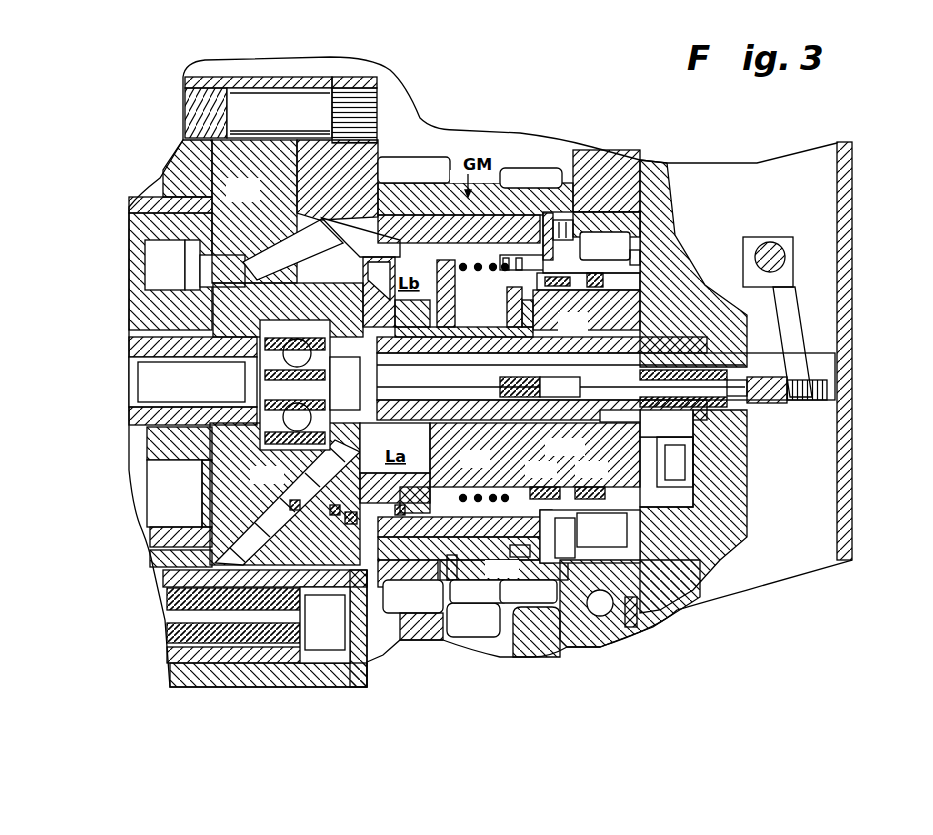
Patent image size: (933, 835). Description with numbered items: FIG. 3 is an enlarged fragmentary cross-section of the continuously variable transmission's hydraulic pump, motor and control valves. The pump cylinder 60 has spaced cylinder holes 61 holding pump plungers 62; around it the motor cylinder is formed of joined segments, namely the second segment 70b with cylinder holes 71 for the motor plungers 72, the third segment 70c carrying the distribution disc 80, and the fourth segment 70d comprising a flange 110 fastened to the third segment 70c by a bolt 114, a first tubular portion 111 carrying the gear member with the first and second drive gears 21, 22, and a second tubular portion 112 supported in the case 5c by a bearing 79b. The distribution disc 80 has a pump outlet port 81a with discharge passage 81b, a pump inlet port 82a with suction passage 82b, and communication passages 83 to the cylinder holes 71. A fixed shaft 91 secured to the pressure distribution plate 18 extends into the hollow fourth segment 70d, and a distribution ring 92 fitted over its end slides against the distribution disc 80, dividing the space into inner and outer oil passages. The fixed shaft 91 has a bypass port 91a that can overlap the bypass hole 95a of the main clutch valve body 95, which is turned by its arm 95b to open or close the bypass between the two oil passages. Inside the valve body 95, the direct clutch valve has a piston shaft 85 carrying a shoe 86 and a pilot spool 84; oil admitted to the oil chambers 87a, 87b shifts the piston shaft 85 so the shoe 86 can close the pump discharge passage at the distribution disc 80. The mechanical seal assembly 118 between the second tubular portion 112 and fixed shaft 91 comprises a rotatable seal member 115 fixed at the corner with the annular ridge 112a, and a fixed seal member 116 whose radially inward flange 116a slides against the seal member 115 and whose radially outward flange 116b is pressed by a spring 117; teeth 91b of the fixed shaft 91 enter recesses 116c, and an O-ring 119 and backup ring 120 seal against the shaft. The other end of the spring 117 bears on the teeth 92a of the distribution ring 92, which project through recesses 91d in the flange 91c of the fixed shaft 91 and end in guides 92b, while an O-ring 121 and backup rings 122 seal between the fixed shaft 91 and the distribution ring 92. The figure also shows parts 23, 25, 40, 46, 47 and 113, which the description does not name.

The case 5c is at (603, 170).
The pressure distribution plate 18 is at (738, 487).
The first drive gear 21 is at (408, 165).
The second drive gear 22 is at (535, 172).
The projection 23 is at (420, 640).
The projection 25 is at (545, 650).
The cover 40 is at (825, 267).
The lever 46 is at (798, 322).
The nut 47 is at (766, 377).
The pump cylinder 60 is at (150, 456).
The cylinder holes 61 is at (148, 484).
The pump plungers 62 is at (130, 250).
The second cylinder segment 70b is at (197, 75).
The third cylinder segment 70c is at (250, 77).
The fourth cylinder segment 70d is at (318, 80).
The cylinder holes 71 is at (250, 665).
The motor plungers 72 is at (172, 632).
The bearing 79b is at (635, 160).
The distribution disc 80 is at (258, 200).
The pump outlet port 81a is at (220, 507).
The discharge passage 81b is at (297, 467).
The pump inlet port 82a is at (225, 270).
The suction passage 82b is at (270, 250).
The communication passages 83 is at (300, 515).
The pilot spool 84 is at (700, 428).
The piston shaft 85 is at (495, 425).
The shoe 86 is at (380, 415).
The oil chamber 87a is at (700, 450).
The oil chamber 87b is at (605, 430).
The fixed shaft 91 is at (585, 331).
The bypass port 91a is at (508, 318).
The teeth 91b is at (520, 555).
The flange 91c is at (455, 268).
The recesses 91d is at (453, 600).
The distribution ring 92 is at (382, 262).
The teeth 92a is at (450, 606).
The guides 92b is at (503, 570).
The main clutch valve body 95 is at (535, 455).
The bypass hole 95a is at (512, 338).
The arm 95b is at (666, 472).
The flange 110 is at (398, 112).
The first tubular portion 111 is at (417, 230).
The second tubular portion 112 is at (632, 240).
The annular ridge 112a is at (632, 258).
The seal 113 is at (556, 215).
The bolt 114 is at (272, 100).
The rotatable seal member 115 is at (560, 265).
The fixed seal member 116 is at (520, 260).
The radially inward flange 116a is at (628, 285).
The radially outward flange 116b is at (505, 272).
The recesses 116c is at (540, 505).
The spring 117 is at (505, 255).
The mechanical seal assembly 118 is at (586, 86).
The O-ring 119 is at (540, 492).
The backup ring 120 is at (585, 492).
The O-ring 121 is at (352, 512).
The backup rings 122 is at (332, 505).